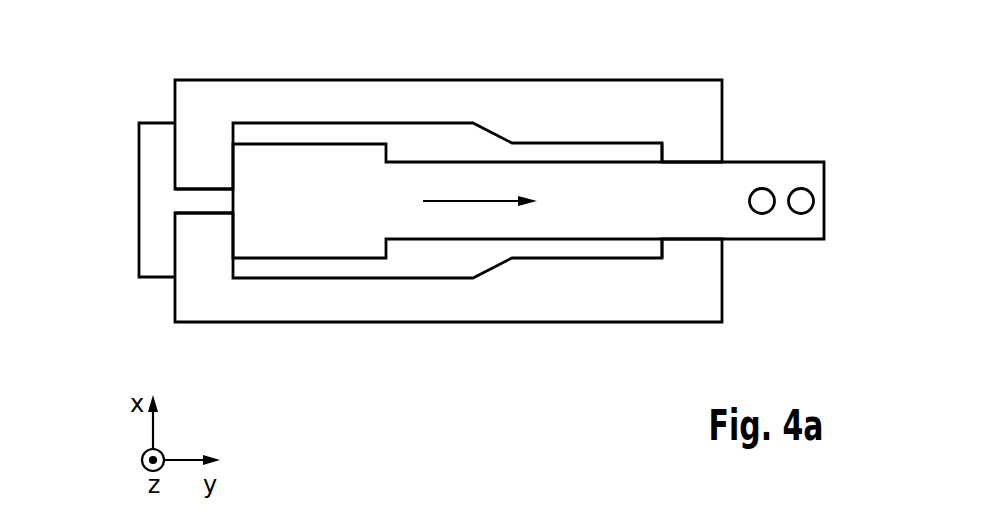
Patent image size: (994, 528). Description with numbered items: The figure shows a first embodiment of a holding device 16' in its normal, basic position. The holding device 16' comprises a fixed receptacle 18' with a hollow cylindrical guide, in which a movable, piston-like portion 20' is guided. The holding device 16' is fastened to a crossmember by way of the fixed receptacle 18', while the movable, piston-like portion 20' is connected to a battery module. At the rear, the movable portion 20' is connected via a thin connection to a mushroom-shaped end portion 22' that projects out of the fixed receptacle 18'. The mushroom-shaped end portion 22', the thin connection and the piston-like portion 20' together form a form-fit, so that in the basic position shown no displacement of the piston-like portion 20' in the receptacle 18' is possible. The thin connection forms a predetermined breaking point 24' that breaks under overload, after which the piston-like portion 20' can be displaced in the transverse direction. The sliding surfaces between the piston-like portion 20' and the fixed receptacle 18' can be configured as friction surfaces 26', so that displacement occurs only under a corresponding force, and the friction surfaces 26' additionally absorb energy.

The holding device 16' is at (481, 161).
The fixed receptacle 18' is at (448, 234).
The movable, piston-like portion 20' is at (528, 137).
The mushroom-shaped end portion 22' is at (122, 200).
The predetermined breaking point 24' is at (206, 115).
The friction surfaces 26' is at (656, 194).